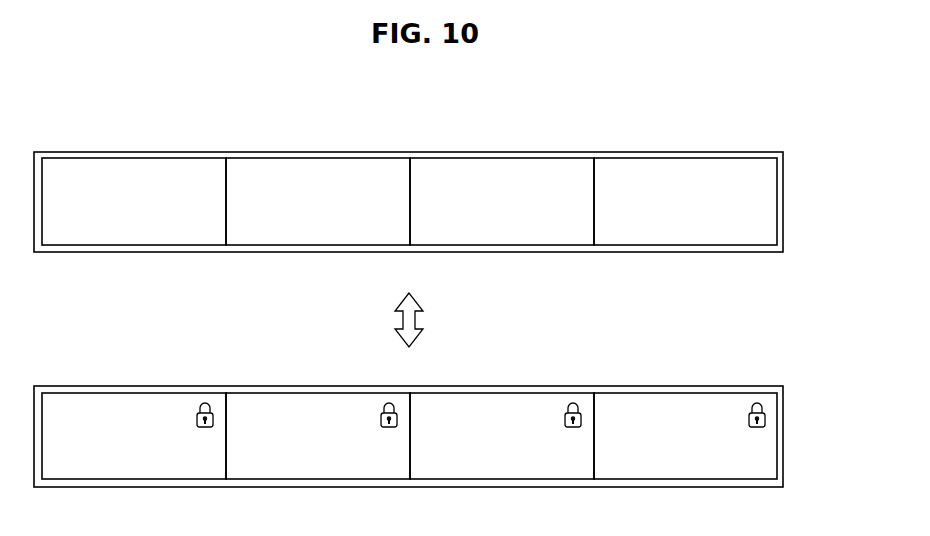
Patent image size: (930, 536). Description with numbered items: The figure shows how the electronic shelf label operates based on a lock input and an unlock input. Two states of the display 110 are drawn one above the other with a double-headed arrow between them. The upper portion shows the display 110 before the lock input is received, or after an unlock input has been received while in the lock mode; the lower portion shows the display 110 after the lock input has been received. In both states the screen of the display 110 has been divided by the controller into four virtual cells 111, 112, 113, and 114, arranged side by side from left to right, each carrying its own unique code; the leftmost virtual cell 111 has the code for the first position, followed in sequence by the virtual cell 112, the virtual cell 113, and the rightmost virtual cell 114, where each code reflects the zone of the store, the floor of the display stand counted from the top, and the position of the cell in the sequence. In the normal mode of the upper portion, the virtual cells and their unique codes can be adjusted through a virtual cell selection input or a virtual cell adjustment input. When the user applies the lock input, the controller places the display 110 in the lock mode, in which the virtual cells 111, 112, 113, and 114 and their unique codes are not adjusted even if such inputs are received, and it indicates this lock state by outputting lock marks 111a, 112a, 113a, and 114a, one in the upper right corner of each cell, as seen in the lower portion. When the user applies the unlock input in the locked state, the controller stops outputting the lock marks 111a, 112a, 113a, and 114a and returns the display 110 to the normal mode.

The display 110 is at (775, 134).
The virtual cell 111 is at (78, 165).
The virtual cell 112 is at (262, 165).
The virtual cell 113 is at (446, 165).
The virtual cell 114 is at (630, 165).
The lock mark 111a is at (202, 405).
The lock mark 112a is at (386, 405).
The lock mark 113a is at (570, 405).
The lock mark 114a is at (754, 405).